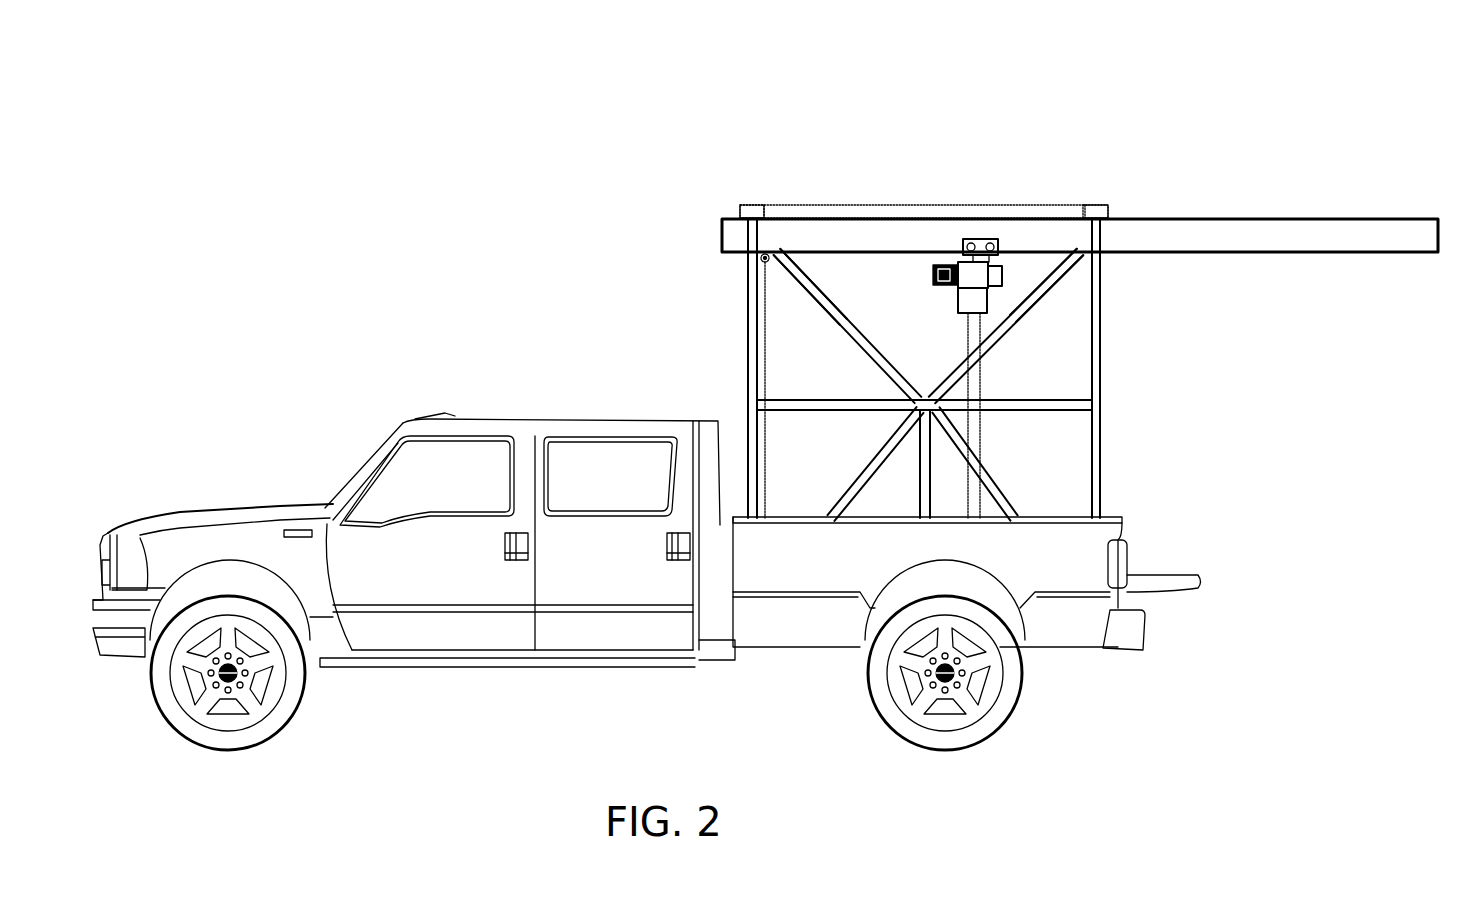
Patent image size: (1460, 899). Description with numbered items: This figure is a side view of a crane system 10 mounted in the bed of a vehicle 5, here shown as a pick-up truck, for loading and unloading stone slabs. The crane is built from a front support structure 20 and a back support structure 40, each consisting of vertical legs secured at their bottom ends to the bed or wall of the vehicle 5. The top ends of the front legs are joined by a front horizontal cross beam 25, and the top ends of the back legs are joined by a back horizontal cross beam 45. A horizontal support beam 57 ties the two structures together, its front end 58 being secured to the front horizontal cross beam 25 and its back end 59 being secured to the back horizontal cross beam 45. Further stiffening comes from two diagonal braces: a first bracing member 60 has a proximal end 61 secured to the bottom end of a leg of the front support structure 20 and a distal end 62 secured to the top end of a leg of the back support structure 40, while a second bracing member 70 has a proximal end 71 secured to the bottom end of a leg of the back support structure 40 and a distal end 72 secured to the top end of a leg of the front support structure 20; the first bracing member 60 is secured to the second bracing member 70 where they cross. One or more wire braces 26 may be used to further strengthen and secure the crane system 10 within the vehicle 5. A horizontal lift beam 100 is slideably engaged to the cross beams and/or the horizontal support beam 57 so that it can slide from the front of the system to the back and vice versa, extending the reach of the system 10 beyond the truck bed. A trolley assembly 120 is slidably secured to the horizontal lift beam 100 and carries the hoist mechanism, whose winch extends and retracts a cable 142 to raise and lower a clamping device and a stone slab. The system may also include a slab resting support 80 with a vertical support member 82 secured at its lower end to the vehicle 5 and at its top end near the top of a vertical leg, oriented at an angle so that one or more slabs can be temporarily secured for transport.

The vehicle 5 is at (462, 627).
The crane system 10 is at (820, 132).
The front support structure 20 is at (748, 297).
The front horizontal cross beam 25 is at (750, 205).
The wire brace 26 is at (765, 322).
The back support structure 40 is at (1095, 295).
The back horizontal cross beam 45 is at (1098, 205).
The horizontal support beam 57 is at (900, 205).
The front end 58 is at (790, 205).
The back end 59 is at (1030, 205).
The first bracing member 60 is at (858, 340).
The proximal end 61 is at (810, 265).
The distal end 62 is at (1010, 497).
The second bracing member 70 is at (1022, 310).
The proximal end 71 is at (1037, 293).
The distal end 72 is at (845, 497).
The slab resting support 80 is at (835, 403).
The vertical support member 82 is at (925, 462).
The horizontal lift beam 100 is at (1195, 232).
The trolley assembly 120 is at (972, 238).
The cable 142 is at (980, 385).